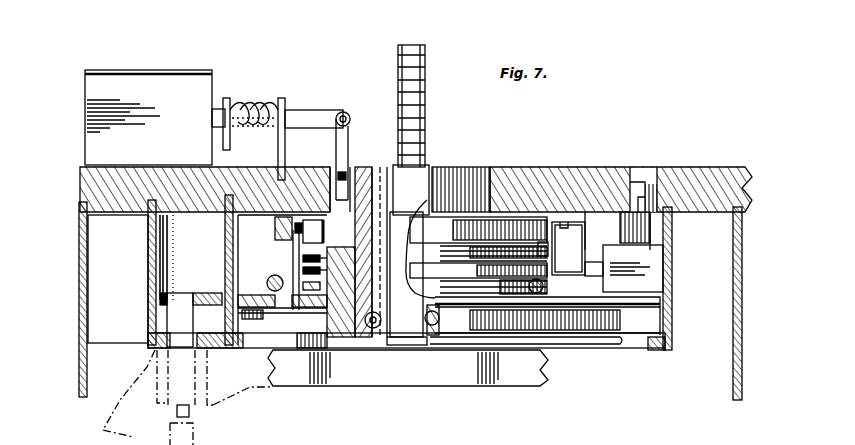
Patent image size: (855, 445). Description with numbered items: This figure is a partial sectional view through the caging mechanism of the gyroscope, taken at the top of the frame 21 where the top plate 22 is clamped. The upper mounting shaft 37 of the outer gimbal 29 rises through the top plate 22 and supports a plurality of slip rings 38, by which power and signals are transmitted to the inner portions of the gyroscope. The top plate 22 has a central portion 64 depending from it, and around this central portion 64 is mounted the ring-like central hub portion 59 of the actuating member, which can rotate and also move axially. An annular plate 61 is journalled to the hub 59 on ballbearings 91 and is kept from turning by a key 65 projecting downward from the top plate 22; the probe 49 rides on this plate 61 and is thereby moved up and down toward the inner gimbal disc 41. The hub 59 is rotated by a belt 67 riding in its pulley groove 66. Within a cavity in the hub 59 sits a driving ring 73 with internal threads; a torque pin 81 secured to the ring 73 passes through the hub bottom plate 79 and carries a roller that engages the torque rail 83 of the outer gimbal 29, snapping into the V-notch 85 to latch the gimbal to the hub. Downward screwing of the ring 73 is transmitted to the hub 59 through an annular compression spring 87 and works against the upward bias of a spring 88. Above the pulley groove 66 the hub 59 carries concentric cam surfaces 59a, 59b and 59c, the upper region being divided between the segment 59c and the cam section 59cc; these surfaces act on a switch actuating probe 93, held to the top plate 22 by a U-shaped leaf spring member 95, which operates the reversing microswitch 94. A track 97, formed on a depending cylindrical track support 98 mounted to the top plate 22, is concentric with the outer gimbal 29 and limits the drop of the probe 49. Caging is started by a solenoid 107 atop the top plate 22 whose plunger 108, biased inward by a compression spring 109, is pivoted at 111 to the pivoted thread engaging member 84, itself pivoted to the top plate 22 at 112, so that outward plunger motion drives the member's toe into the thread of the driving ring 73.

The frame 21 is at (79, 258).
The top plate 22 is at (571, 178).
The outer gimbal 29 is at (476, 378).
The upper mounting shaft 37 is at (408, 322).
The slip rings 38 is at (425, 68).
The inner gimbal disc 41 is at (205, 440).
The probe 49 is at (185, 284).
The central hub portion 59 is at (275, 224).
The cam surface 59a is at (478, 270).
The cam surface 59b is at (543, 248).
The cam surface 59c is at (478, 230).
The cam section 59cc is at (435, 198).
The annular plate 61 is at (215, 294).
The central portion 64 is at (348, 325).
The key 65 is at (225, 237).
The pulley groove 66 is at (268, 285).
The belt 67 is at (544, 287).
The driving ring 73 is at (295, 235).
The bottom plate 79 is at (310, 308).
The torque pin 81 is at (293, 250).
The torque ring or rail 83 is at (505, 343).
The pivoted thread engaging member 84 is at (350, 153).
The V-notch 85 is at (282, 321).
The annular compression spring 87 is at (303, 271).
The spring 88 is at (303, 262).
The ballbearings 91 is at (282, 314).
The probe 93 is at (545, 262).
The reversing microswitch 94 is at (647, 255).
The U-shaped leaf spring member 95 is at (585, 233).
The track 97 is at (668, 350).
The track support 98 is at (148, 264).
The solenoid 107 is at (160, 82).
The plunger 108 is at (306, 110).
The compression spring 109 is at (254, 104).
The pivot 111 is at (348, 115).
The pivot 112 is at (338, 172).